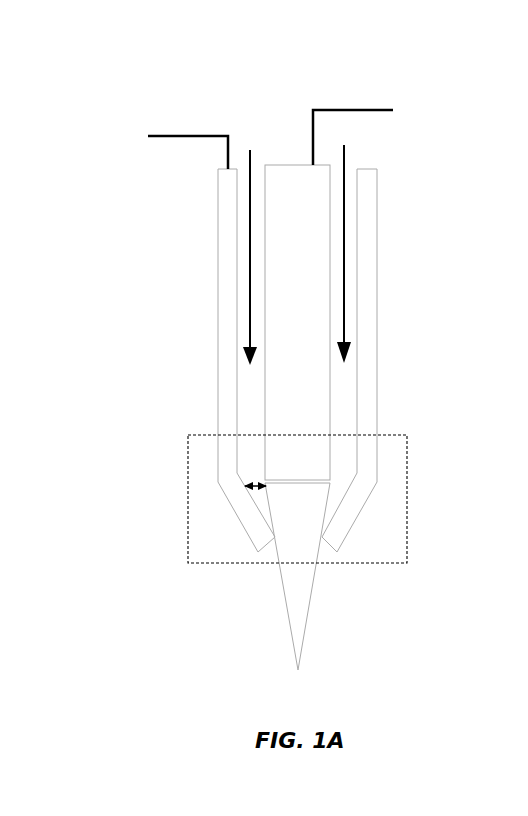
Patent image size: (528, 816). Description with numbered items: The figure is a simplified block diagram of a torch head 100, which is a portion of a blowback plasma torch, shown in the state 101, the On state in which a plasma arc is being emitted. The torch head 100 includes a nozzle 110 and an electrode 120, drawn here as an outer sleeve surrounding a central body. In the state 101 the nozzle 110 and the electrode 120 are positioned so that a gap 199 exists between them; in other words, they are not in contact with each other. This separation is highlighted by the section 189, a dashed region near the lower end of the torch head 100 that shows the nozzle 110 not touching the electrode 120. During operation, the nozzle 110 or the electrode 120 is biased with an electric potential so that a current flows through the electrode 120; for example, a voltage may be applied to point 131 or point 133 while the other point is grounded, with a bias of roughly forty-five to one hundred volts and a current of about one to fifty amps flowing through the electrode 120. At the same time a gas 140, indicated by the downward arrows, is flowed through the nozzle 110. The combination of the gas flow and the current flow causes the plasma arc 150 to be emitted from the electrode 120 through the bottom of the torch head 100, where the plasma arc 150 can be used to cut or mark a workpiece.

The torch head 100 is at (168, 327).
The state 101 is at (172, 114).
The nozzle 110 is at (377, 214).
The electrode 120 is at (265, 240).
The point 131 is at (185, 136).
The point 133 is at (372, 110).
The gas 140 is at (343, 272).
The plasma arc 150 is at (305, 627).
The section 189 is at (407, 490).
The gap 199 is at (257, 487).